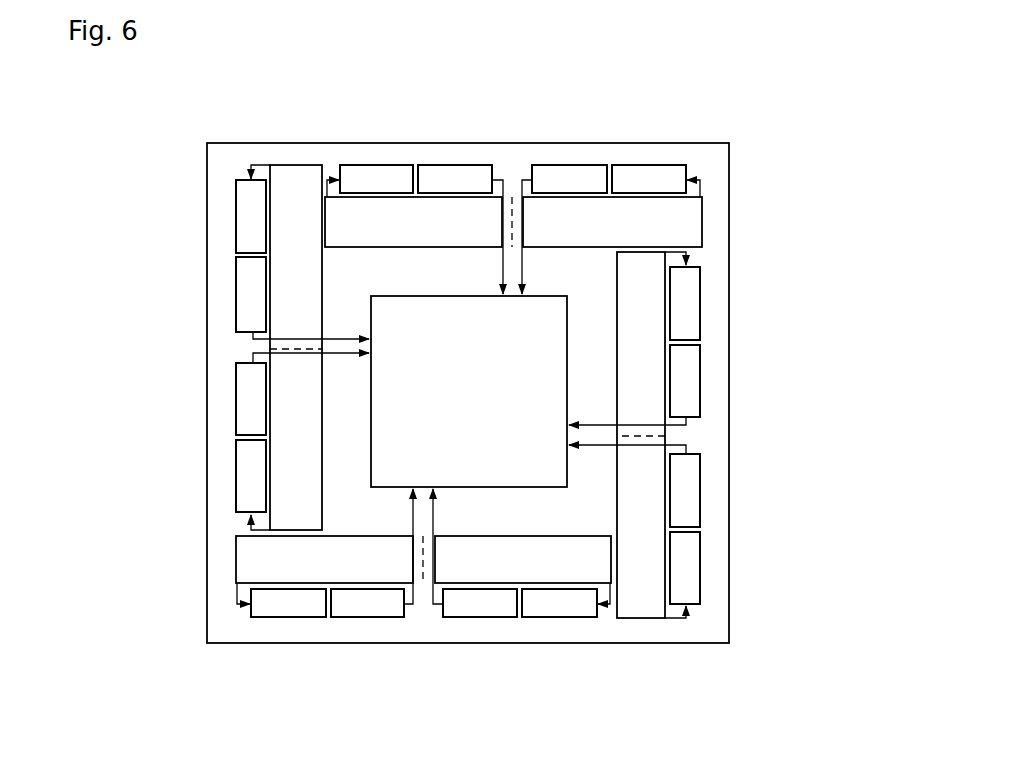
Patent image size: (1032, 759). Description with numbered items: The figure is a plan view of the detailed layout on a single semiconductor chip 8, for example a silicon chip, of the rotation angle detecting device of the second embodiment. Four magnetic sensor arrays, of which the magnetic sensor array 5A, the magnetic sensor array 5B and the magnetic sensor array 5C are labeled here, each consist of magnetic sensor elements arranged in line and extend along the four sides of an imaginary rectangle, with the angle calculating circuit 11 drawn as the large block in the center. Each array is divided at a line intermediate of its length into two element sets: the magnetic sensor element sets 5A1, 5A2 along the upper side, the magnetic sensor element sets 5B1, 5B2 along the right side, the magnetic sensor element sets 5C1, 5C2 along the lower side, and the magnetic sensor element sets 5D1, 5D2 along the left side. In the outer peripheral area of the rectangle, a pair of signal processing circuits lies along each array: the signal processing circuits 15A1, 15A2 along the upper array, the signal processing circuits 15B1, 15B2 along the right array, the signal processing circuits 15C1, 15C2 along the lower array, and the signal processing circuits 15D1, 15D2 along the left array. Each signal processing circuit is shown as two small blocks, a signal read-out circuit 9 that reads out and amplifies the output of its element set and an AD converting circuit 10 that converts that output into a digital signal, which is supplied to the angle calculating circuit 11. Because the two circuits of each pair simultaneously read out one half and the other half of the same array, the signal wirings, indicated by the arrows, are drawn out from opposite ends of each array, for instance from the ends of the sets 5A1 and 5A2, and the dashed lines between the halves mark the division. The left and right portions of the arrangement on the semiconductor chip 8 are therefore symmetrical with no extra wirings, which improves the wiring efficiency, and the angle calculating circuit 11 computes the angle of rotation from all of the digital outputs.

The semiconductor chip 8 is at (218, 165).
The signal read-out circuit 9 is at (370, 165).
The AD converting circuit 10 is at (440, 165).
The angle calculating circuit 11 is at (385, 320).
The magnetic sensor array 5A is at (512, 193).
The magnetic sensor element set 5A1 is at (435, 238).
The magnetic sensor element set 5A2 is at (583, 238).
The magnetic sensor array 5B is at (672, 436).
The magnetic sensor element set 5B1 is at (623, 339).
The magnetic sensor element set 5B2 is at (630, 510).
The magnetic sensor array 5C is at (423, 587).
The magnetic sensor element set 5C1 is at (522, 548).
The magnetic sensor element set 5C2 is at (362, 548).
The magnetic sensor element set 5D1 is at (308, 422).
The magnetic sensor element set 5D2 is at (315, 277).
The signal processing circuit 15A1 is at (425, 83).
The signal processing circuit 15A2 is at (632, 83).
The signal processing circuit 15B1 is at (797, 290).
The signal processing circuit 15B2 is at (797, 480).
The signal processing circuit 15C1 is at (550, 692).
The signal processing circuit 15C2 is at (350, 692).
The signal processing circuit 15D1 is at (148, 410).
The signal processing circuit 15D2 is at (145, 185).